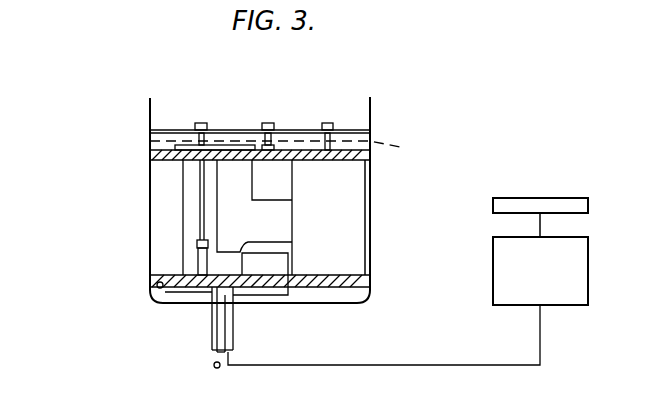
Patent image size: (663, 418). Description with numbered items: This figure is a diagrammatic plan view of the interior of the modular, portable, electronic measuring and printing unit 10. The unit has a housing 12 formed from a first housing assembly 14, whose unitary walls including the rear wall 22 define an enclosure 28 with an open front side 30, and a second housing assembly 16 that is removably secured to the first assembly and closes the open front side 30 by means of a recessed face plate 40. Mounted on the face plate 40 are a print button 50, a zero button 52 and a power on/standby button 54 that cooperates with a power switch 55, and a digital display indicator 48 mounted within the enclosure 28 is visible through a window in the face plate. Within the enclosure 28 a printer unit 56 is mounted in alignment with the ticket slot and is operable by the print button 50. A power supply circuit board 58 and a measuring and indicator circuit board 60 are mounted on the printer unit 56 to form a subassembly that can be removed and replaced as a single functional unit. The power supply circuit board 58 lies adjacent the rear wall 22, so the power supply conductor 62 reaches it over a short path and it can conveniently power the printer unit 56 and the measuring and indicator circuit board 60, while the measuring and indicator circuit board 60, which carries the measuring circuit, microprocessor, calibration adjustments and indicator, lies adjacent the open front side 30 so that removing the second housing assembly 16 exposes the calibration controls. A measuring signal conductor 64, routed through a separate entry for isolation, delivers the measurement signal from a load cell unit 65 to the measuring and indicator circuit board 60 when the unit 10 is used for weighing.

The modular portable electronic measuring system and printing unit 10 is at (125, 306).
The housing 12 is at (372, 279).
The first housing assembly 14 is at (372, 240).
The second housing assembly 16 is at (372, 125).
The rear wall 22 is at (250, 307).
The enclosure 28 is at (350, 293).
The open front side 30 is at (290, 145).
The face plate 40 is at (282, 129).
The digital display indicator 48 is at (212, 147).
The print button 50 is at (326, 123).
The zero button 52 is at (274, 123).
The power on/standby button 54 is at (196, 123).
The power switch 55 is at (196, 257).
The printer unit 56 is at (356, 187).
The power supply circuit board 58 is at (160, 292).
The measuring and indicator circuit board 60 is at (156, 163).
The power supply conductor 62 is at (213, 369).
The measuring signal conductor 64 is at (302, 366).
The load cell unit 65 is at (568, 300).